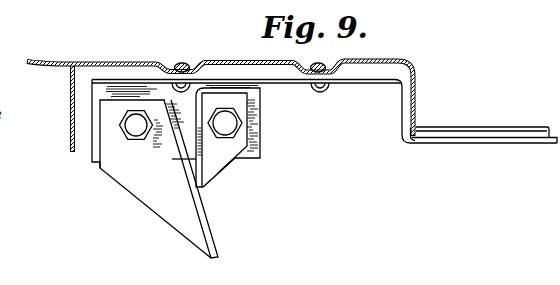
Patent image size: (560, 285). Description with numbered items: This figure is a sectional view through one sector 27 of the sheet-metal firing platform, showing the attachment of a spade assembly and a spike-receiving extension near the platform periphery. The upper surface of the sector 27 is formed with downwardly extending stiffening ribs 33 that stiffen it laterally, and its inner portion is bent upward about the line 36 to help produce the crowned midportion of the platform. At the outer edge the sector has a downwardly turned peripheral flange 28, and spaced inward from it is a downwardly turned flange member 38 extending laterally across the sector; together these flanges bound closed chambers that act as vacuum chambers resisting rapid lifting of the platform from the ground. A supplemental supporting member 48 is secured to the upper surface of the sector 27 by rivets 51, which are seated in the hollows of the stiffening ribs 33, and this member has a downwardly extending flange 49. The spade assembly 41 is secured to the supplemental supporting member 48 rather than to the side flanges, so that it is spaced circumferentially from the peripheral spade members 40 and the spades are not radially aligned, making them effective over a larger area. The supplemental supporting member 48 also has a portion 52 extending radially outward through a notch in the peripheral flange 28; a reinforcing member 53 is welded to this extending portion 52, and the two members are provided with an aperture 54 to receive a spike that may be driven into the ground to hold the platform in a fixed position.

The sector 27 is at (398, 58).
The peripheral flange 28 is at (419, 80).
The stiffening ribs 33 is at (151, 61).
The line 36 is at (61, 62).
The flange member 38 is at (68, 136).
The spade member 40 is at (201, 4).
The spade member 41 is at (153, 193).
The supplemental supporting member 48 is at (287, 85).
The downwardly extending flange 49 is at (266, 142).
The rivets 51 is at (181, 65).
The extending portion 52 is at (408, 146).
The reinforcing member 53 is at (443, 129).
The aperture 54 is at (516, 139).